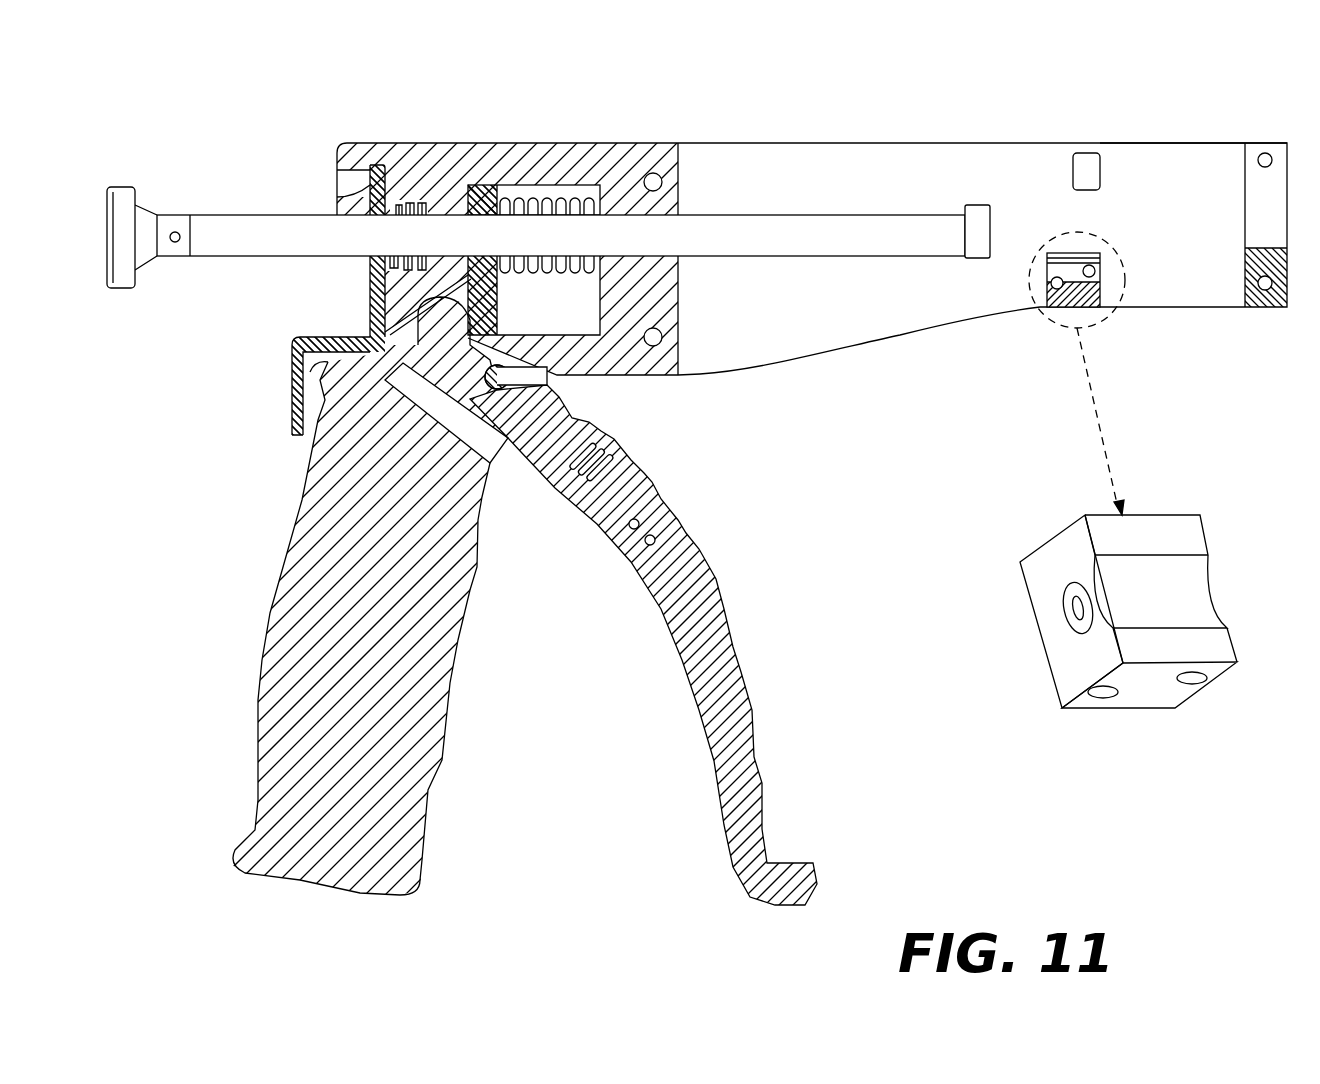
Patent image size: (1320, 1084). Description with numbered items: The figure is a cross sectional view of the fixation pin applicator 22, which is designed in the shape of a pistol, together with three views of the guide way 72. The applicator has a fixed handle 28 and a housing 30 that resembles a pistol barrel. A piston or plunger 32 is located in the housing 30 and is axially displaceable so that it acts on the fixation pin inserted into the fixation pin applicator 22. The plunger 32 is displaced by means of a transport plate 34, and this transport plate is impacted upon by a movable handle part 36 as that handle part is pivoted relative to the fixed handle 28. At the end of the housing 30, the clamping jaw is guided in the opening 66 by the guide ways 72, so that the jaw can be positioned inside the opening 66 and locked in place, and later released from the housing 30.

The fixation pin applicator 22 is at (218, 433).
The fixed handle 28 is at (258, 715).
The housing 30 is at (830, 143).
The plunger 32 is at (268, 215).
The transport plate 34 is at (555, 190).
The movable handle part 36 is at (748, 691).
The opening 66 is at (1178, 143).
The guide way 72 is at (1102, 287).